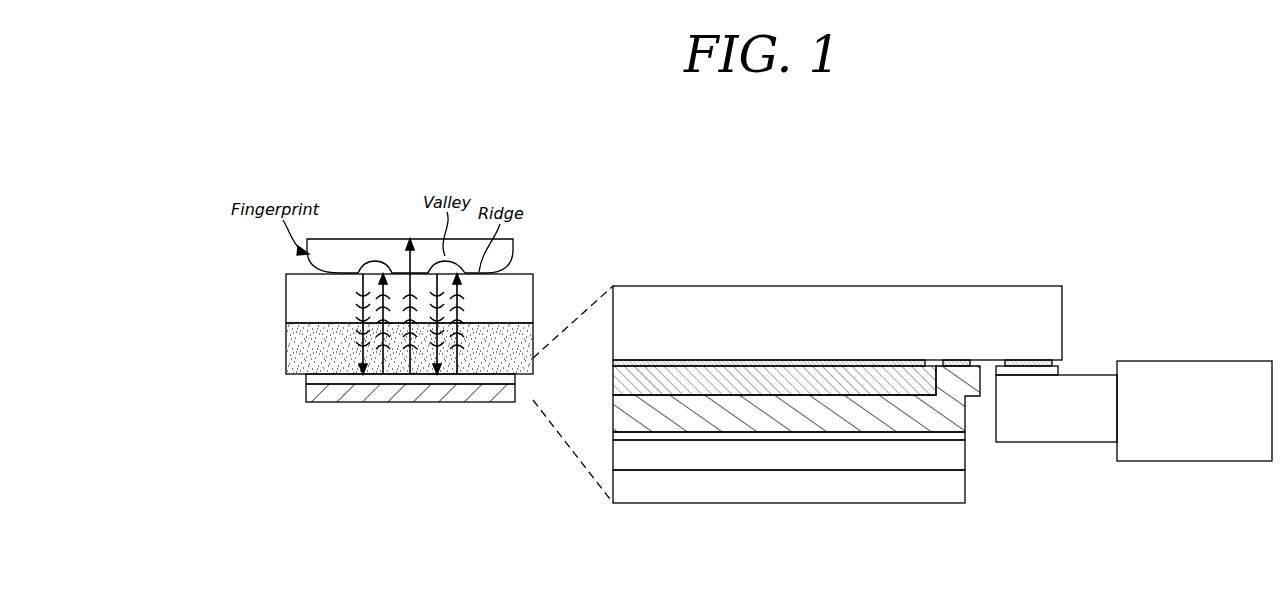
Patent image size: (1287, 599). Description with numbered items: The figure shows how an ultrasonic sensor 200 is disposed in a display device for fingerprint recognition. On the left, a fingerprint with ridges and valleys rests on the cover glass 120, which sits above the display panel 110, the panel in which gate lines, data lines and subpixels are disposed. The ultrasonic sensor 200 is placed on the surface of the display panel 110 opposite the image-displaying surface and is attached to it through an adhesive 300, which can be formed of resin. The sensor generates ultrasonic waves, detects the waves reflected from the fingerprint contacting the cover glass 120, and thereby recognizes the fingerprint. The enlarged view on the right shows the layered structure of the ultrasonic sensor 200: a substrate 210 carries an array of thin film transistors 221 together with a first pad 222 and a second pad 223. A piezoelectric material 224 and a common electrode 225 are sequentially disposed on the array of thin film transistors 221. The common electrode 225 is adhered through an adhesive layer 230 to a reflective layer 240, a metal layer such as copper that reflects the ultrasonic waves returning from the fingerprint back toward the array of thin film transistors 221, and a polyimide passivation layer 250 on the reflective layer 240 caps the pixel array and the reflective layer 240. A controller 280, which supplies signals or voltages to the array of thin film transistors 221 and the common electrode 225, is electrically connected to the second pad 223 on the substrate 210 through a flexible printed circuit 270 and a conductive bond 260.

The display panel 110 is at (296, 352).
The cover glass 120 is at (296, 297).
The ultrasonic sensor 200 is at (306, 398).
The adhesive 300 is at (306, 378).
The substrate 210 is at (820, 330).
The array of thin film transistors 221 is at (613, 364).
The first pad 222 is at (952, 360).
The second pad 223 is at (1027, 359).
The piezoelectric material 224 is at (772, 392).
The common electrode 225 is at (772, 422).
The adhesive layer 230 is at (958, 437).
The reflective layer 240 is at (772, 465).
The passivation layer 250 is at (772, 497).
The conductive bond 260 is at (1060, 372).
The flexible printed circuit 270 is at (1041, 417).
The controller 280 is at (1178, 417).